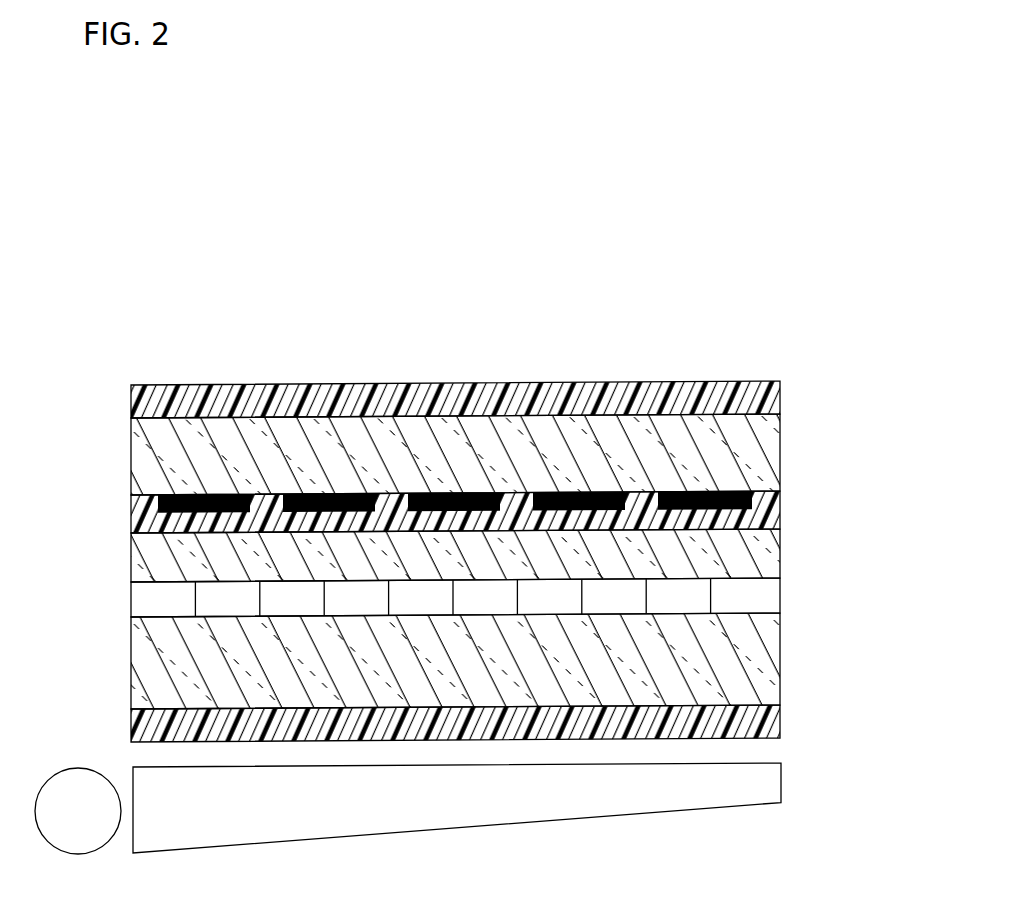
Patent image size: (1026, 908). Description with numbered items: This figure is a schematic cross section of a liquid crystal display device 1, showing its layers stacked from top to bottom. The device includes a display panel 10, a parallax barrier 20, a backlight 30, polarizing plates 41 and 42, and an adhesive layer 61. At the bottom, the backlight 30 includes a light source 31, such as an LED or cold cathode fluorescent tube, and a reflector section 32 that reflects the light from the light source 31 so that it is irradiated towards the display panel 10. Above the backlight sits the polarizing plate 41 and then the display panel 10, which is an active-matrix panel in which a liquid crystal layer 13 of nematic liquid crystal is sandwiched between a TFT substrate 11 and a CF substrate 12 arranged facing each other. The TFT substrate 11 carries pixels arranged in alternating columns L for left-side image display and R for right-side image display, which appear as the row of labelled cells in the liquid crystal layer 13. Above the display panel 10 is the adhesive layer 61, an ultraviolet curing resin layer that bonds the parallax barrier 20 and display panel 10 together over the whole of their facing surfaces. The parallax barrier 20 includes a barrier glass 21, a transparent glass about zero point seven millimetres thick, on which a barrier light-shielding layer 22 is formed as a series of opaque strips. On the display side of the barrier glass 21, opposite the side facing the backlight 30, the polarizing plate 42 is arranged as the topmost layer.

The liquid crystal display device 1 is at (767, 233).
The display panel 10 is at (518, 619).
The TFT substrate 11 is at (483, 661).
The CF substrate 12 is at (781, 549).
The liquid crystal layer 13 is at (781, 596).
The parallax barrier 20 is at (518, 471).
The barrier glass 21 is at (781, 455).
The barrier light-shielding layer 22 is at (710, 492).
The backlight 30 is at (463, 798).
The light source 31 is at (78, 778).
The reflector section 32 is at (781, 782).
The polarizing plate 41 is at (781, 721).
The polarizing plate 42 is at (781, 401).
The adhesive layer 61 is at (781, 518).